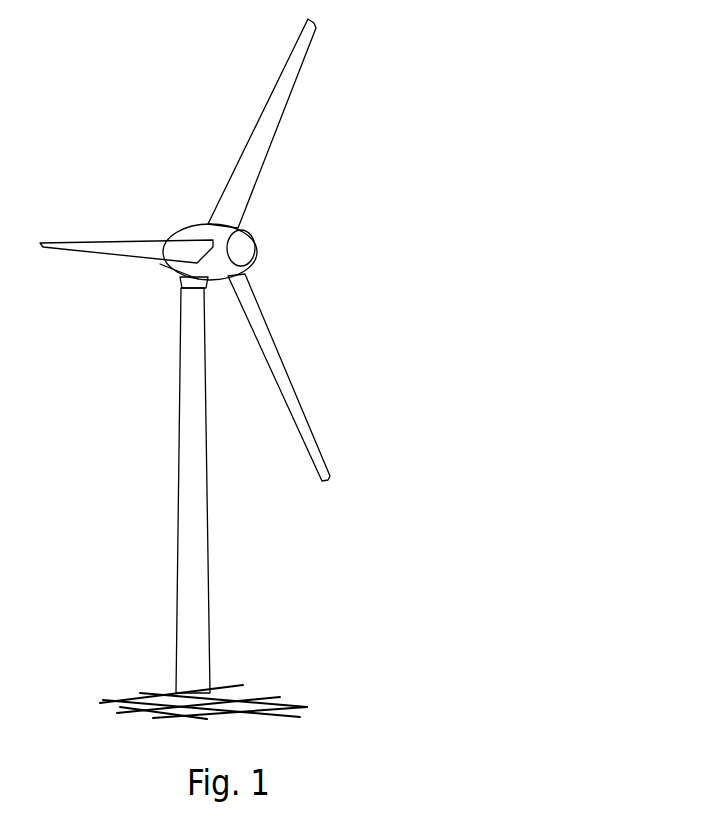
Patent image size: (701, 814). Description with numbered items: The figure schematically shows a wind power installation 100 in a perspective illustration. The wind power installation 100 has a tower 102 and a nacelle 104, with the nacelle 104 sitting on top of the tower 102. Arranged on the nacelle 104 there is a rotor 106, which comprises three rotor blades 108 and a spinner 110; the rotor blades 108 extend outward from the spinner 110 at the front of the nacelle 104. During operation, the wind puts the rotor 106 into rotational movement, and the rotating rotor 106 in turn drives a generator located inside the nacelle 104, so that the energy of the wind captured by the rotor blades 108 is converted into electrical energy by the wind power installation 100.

The wind power installation 100 is at (156, 328).
The tower 102 is at (197, 553).
The nacelle 104 is at (190, 232).
The rotor 106 is at (299, 200).
The rotor blades 108 is at (280, 97).
The spinner 110 is at (246, 248).